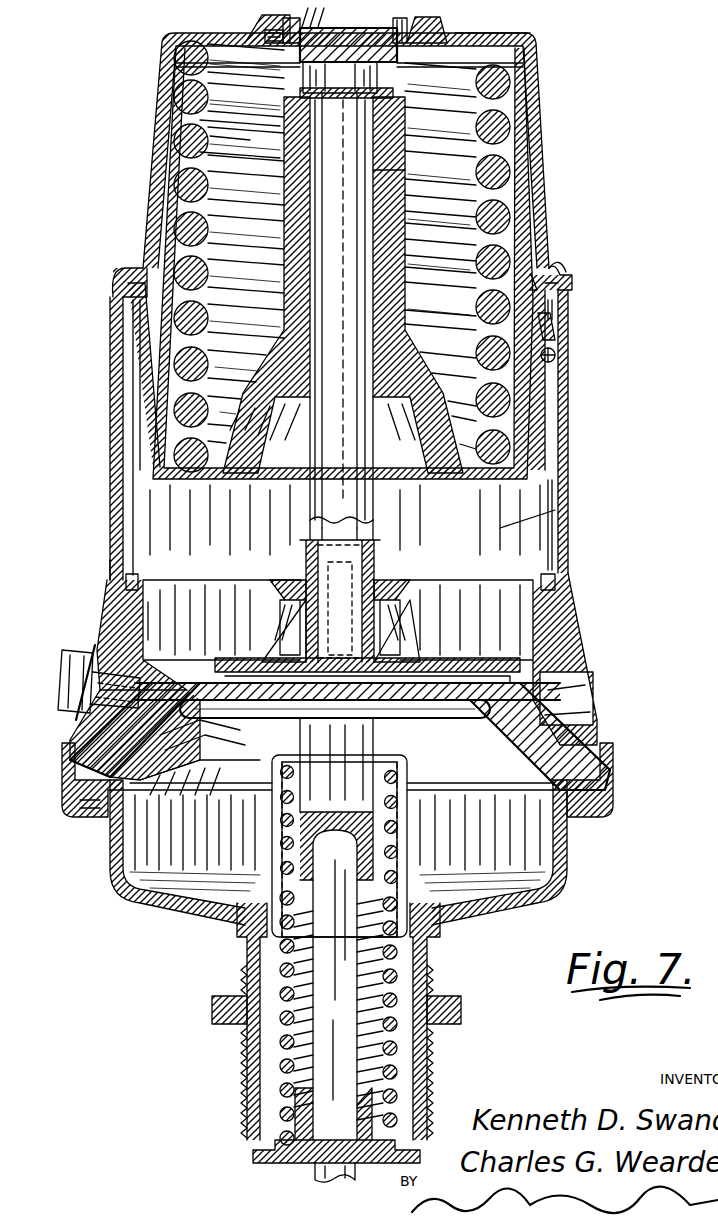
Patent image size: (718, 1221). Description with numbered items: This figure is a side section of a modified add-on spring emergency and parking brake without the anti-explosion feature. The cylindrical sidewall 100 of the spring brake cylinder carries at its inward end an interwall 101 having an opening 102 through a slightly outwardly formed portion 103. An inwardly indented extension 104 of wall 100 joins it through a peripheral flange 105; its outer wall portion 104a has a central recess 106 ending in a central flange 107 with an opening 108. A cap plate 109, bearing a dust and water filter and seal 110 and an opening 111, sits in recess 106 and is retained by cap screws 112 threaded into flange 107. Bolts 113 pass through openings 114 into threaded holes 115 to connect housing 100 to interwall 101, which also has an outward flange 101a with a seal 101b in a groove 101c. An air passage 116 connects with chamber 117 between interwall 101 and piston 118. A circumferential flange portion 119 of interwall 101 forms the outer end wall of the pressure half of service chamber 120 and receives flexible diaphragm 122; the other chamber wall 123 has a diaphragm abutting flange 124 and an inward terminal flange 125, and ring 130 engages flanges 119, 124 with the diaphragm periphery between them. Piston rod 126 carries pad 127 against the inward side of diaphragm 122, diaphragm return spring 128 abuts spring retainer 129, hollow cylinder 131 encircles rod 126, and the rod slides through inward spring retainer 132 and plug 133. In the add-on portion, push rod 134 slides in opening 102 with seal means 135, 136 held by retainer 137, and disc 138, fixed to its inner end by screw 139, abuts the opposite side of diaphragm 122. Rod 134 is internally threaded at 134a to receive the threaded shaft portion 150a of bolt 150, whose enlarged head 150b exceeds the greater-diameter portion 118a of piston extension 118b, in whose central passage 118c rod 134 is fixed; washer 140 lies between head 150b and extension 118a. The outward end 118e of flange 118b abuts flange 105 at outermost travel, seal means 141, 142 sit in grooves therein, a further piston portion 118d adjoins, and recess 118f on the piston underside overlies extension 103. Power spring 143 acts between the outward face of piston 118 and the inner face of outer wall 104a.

The cylindrical sidewall 100 is at (568, 534).
The interwall 101 is at (180, 632).
The outwardly extending flange 101a is at (180, 620).
The seal 101b is at (110, 575).
The groove 101c is at (138, 578).
The opening 102 is at (374, 560).
The outwardly formed portion 103 is at (395, 590).
The inwardly indented extension 104 is at (549, 145).
The outer wall portion 104a is at (462, 45).
The outwardly peripherally extending flange 105 is at (566, 268).
The recess 106 is at (432, 18).
The central flange 107 is at (400, 65).
The opening 108 is at (283, 45).
The cap plate 109 is at (250, 46).
The dust and water filter and seal 110 is at (348, 45).
The opening 111 is at (314, 13).
The cap screws 112 is at (262, 18).
The bolts 113 is at (62, 660).
The openings 114 is at (95, 645).
The internally threaded holes 115 is at (160, 680).
The air passage 116 is at (568, 688).
The chamber 117 is at (555, 510).
The piston 118 is at (470, 479).
The greater outer diameter portion 118a is at (405, 127).
The outward extension 118b is at (405, 215).
The central passage 118c is at (405, 262).
The cup wall 118d is at (545, 408).
The outward end 118e is at (556, 290).
The recess 118f is at (268, 420).
The circumferential flange portion 119 is at (75, 743).
The service chamber 120 is at (485, 700).
The flexible diaphragm 122 is at (205, 745).
The service chamber wall 123 is at (140, 905).
The diaphragm abutting flange 124 is at (78, 817).
The inward terminal flange 125 is at (237, 930).
The piston rod 126 is at (365, 745).
The pad 127 is at (235, 718).
The diaphragm return spring 128 is at (373, 830).
The spring retainer 129 is at (407, 770).
The ring 130 is at (613, 785).
The hollow cylinder 131 is at (433, 970).
The inward spring retainer 132 is at (300, 1150).
The plug 133 is at (253, 1156).
The push rod 134 is at (373, 462).
The internally threaded portion 134a is at (405, 172).
The seal means 135 is at (286, 592).
The seal means 136 is at (275, 625).
The retainer 137 is at (400, 605).
The plate or disc 138 is at (420, 655).
The screw 139 is at (356, 574).
The washer 140 is at (300, 92).
The seal means 141 is at (555, 325).
The seal means 142 is at (555, 355).
The power spring 143 is at (220, 145).
The shaft 150 is at (338, 100).
The externally threaded shaft portion 150a is at (336, 176).
The enlarged head 150b is at (377, 80).